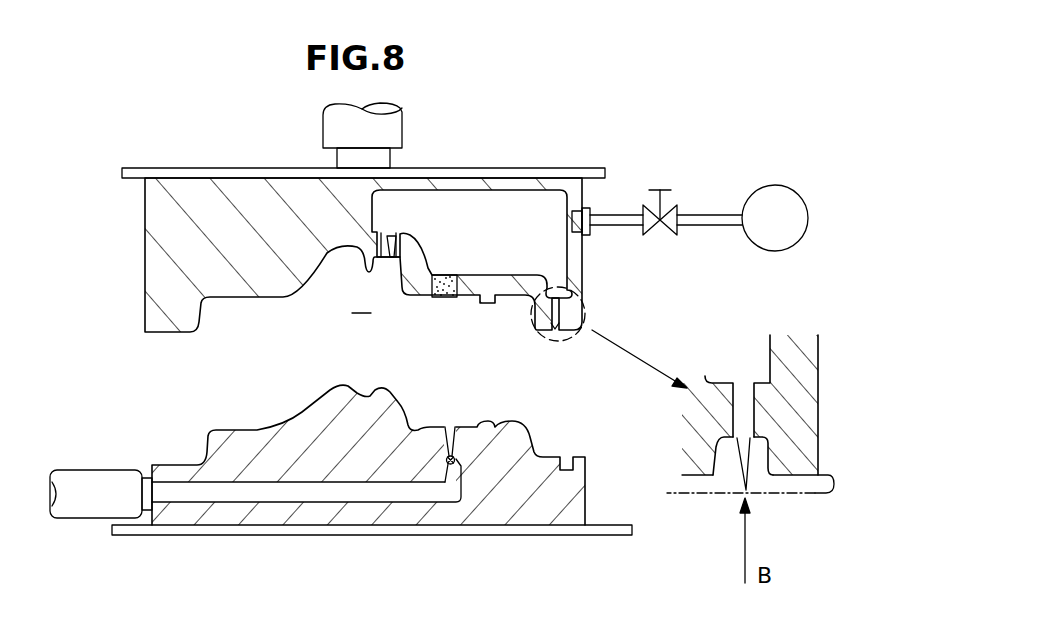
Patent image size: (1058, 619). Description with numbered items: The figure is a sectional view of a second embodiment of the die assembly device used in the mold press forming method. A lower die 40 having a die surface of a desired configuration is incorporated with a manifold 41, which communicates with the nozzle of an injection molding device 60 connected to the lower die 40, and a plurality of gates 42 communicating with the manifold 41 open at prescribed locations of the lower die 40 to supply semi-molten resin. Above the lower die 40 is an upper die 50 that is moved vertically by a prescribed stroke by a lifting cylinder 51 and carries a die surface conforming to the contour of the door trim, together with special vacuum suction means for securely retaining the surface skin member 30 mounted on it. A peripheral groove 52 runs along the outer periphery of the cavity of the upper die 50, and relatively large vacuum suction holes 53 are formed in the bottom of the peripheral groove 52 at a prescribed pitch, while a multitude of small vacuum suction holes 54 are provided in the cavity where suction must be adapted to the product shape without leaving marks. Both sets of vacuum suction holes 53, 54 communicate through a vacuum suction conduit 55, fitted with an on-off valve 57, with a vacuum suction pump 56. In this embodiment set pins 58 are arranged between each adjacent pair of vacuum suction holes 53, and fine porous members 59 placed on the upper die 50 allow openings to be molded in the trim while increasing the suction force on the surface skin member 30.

The surface skin member 30 is at (815, 500).
The lower die 40 is at (328, 445).
The manifold 41 is at (368, 495).
The gate 42 is at (455, 426).
The upper die 50 is at (250, 207).
The lifting cylinder 51 is at (383, 129).
The peripheral groove 52 is at (758, 447).
The vacuum suction hole 53 is at (742, 400).
The small vacuum suction hole 54 is at (395, 236).
The vacuum suction conduit 55 is at (617, 212).
The vacuum suction pump 56 is at (768, 188).
The on-off valve 57 is at (662, 189).
The set pin 58 is at (566, 343).
The fine porous member 59 is at (444, 273).
The injection molding device 60 is at (93, 485).